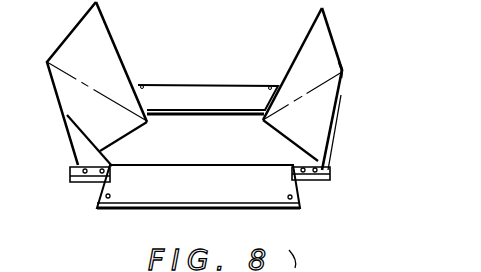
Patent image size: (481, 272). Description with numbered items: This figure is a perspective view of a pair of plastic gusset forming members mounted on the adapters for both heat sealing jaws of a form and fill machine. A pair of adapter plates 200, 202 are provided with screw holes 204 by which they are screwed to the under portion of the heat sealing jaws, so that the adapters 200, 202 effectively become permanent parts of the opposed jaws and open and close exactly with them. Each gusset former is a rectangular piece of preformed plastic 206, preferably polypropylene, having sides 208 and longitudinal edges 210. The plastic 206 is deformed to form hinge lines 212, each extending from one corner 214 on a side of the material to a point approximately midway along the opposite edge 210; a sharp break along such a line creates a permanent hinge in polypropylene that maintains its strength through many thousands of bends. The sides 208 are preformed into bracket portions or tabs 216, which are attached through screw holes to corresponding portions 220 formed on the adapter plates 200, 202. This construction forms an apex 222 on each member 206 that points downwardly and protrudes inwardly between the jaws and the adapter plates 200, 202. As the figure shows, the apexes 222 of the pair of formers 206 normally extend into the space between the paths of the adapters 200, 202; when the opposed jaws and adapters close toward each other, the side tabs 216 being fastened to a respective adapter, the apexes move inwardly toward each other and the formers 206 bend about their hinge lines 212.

The adapter plate 200 is at (168, 88).
The adapter plate 202 is at (228, 195).
The screw holes 204 is at (302, 198).
The piece of preformed plastic 206 is at (83, 46).
The sides 208 is at (338, 98).
The longitudinal edges 210 is at (146, 123).
The hinge lines 212 is at (110, 35).
The corner 214 is at (343, 70).
The bracket portions or tabs 216 is at (333, 134).
The corresponding portions 220 is at (82, 183).
The apex 222 is at (262, 122).